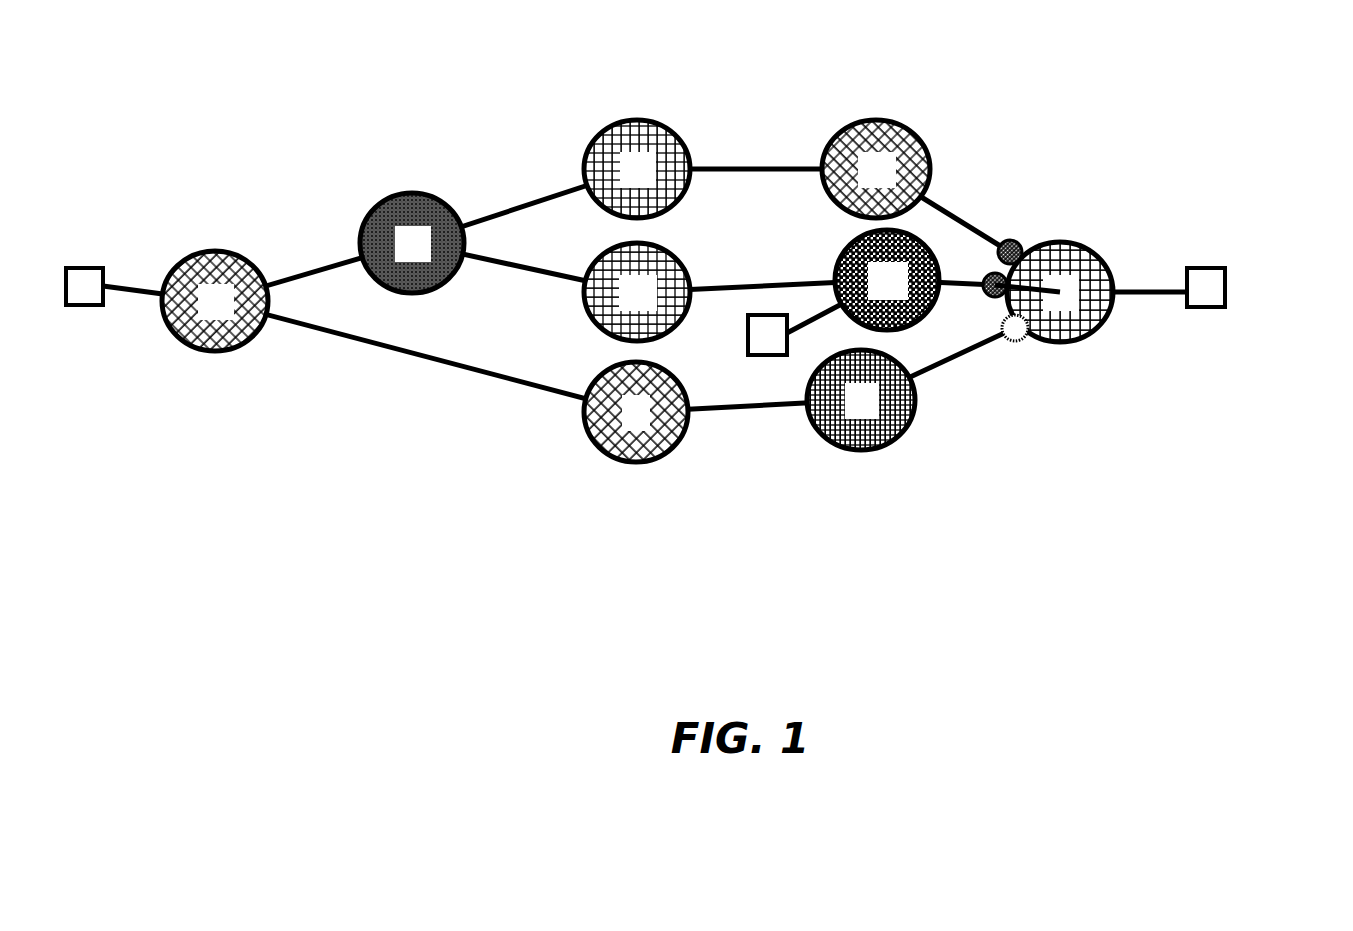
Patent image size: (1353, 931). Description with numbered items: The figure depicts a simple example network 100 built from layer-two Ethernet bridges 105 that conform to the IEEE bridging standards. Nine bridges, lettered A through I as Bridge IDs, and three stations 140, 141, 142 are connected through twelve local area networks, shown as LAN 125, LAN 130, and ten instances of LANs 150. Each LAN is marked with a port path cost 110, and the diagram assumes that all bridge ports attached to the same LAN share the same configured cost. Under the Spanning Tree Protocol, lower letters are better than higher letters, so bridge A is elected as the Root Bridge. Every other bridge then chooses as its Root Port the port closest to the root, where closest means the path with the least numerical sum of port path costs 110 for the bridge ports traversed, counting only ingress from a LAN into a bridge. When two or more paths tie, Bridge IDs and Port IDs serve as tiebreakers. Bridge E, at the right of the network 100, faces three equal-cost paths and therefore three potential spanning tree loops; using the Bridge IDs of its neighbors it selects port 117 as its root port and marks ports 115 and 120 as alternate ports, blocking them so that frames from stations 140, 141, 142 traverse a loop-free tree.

The network 100 is at (702, 328).
The layer 2 Ethernet bridges 105 is at (663, 463).
The port path costs 110 is at (545, 137).
The port 115 is at (1010, 285).
The port 117 is at (1022, 330).
The port 120 is at (1063, 243).
The local area network 125 is at (930, 370).
The local area network 130 is at (965, 217).
The station 140 is at (77, 242).
The station 141 is at (736, 345).
The station 142 is at (1238, 280).
The local area networks 150 is at (312, 297).